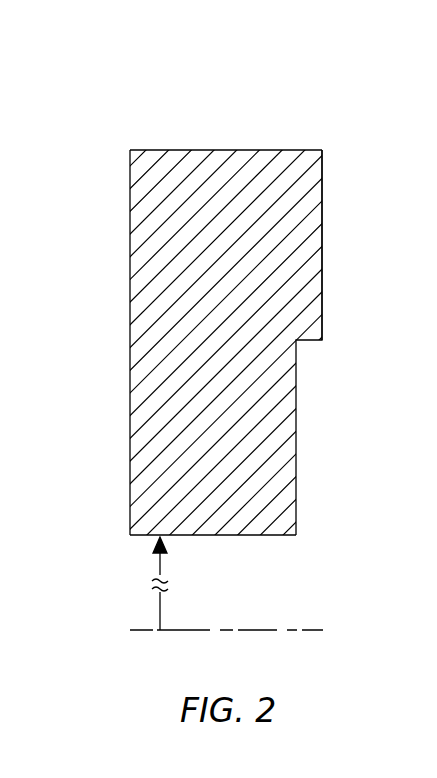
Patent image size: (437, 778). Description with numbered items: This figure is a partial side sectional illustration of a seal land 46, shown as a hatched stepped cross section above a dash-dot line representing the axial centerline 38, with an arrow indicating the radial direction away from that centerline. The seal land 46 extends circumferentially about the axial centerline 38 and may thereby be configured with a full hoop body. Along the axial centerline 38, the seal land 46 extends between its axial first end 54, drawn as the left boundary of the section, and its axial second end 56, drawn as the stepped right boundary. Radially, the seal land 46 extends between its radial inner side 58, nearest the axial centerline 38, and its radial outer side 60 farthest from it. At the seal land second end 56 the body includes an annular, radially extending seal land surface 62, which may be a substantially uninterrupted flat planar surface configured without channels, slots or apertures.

The seal land 46 is at (331, 96).
The axial first end 54 is at (130, 262).
The axial second end 56 is at (322, 262).
The radial inner side 58 is at (268, 536).
The radial outer side 60 is at (252, 150).
The seal land surface 62 is at (379, 262).
The axial centerline 38 is at (303, 630).